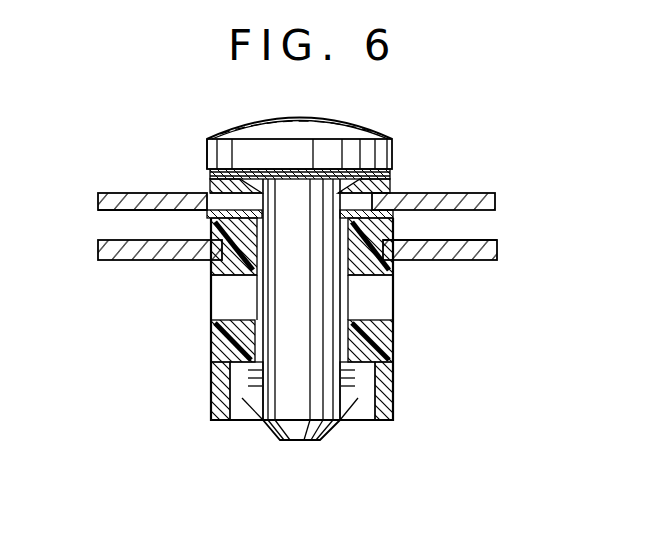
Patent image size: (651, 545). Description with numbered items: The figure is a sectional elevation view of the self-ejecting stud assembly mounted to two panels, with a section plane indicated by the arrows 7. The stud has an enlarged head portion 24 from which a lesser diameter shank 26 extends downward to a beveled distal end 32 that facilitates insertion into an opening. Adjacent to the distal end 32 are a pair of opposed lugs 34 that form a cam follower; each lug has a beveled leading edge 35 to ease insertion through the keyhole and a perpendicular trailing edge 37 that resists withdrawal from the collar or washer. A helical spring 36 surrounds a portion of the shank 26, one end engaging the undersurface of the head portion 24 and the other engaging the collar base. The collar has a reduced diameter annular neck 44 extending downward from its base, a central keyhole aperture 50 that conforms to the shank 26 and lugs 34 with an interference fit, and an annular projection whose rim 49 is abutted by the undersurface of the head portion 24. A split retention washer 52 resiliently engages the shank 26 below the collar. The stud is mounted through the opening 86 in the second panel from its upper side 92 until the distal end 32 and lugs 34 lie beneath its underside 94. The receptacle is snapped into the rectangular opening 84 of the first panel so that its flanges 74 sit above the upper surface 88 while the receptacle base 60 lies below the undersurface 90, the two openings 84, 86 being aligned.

The section line 7- 7 is at (302, 74).
The head portion 24 is at (388, 122).
The shank 26 is at (268, 295).
The distal end 32 is at (310, 441).
The lugs 34 is at (352, 415).
The leading edge 35 is at (248, 420).
The helical spring 36 is at (393, 175).
The trailing edge 37 is at (375, 340).
The annular neck 44 is at (215, 212).
The rim 49 is at (207, 150).
The aperture 50 is at (212, 180).
The retention washer 52 is at (402, 213).
The receptacle base 60 is at (394, 390).
The flange 74 is at (205, 242).
The opening 84 is at (378, 290).
The opening 86 is at (405, 196).
The upper surface 88 is at (480, 240).
The undersurface 90 is at (470, 261).
The upper side 92 is at (113, 192).
The underside 94 is at (108, 212).